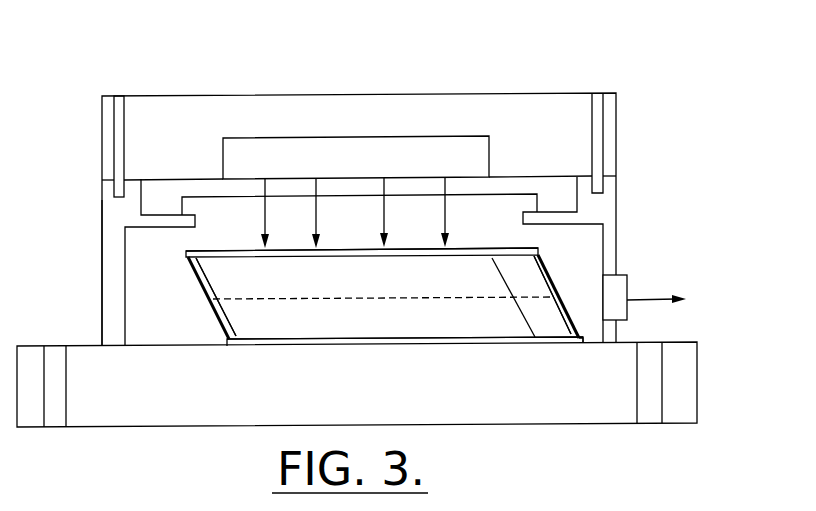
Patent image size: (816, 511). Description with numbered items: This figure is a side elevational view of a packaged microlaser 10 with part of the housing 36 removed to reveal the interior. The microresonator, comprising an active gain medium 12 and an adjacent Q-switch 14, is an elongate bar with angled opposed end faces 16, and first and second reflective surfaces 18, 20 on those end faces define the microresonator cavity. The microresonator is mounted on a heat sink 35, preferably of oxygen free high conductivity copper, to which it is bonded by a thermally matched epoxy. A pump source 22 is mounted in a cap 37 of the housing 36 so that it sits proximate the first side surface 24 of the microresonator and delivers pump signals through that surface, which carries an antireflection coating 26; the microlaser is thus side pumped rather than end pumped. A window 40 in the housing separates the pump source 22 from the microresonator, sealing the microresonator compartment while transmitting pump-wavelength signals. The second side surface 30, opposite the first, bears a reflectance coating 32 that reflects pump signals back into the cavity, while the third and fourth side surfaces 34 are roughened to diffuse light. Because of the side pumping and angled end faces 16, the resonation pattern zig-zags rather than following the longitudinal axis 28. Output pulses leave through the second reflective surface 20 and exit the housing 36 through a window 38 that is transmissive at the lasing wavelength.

The microlaser 10 is at (620, 56).
The active gain medium 12 is at (505, 317).
The Q-switch 14 is at (579, 333).
The opposed end faces 16 is at (542, 283).
The first reflective surface 18 is at (194, 298).
The second reflective surface 20 is at (579, 315).
The pump source 22 is at (356, 140).
The first side surface 24 is at (362, 269).
The antireflection coating 26 is at (362, 234).
The longitudinal axis 28 is at (382, 315).
The second side surface 30 is at (405, 322).
The reflectance coating 32 is at (405, 361).
The third and fourth side surfaces 34 is at (569, 295).
The heat sink 35 is at (357, 406).
The housing 36 is at (72, 273).
The cap 37 is at (389, 219).
The window 38 is at (649, 305).
The window 40 is at (374, 178).